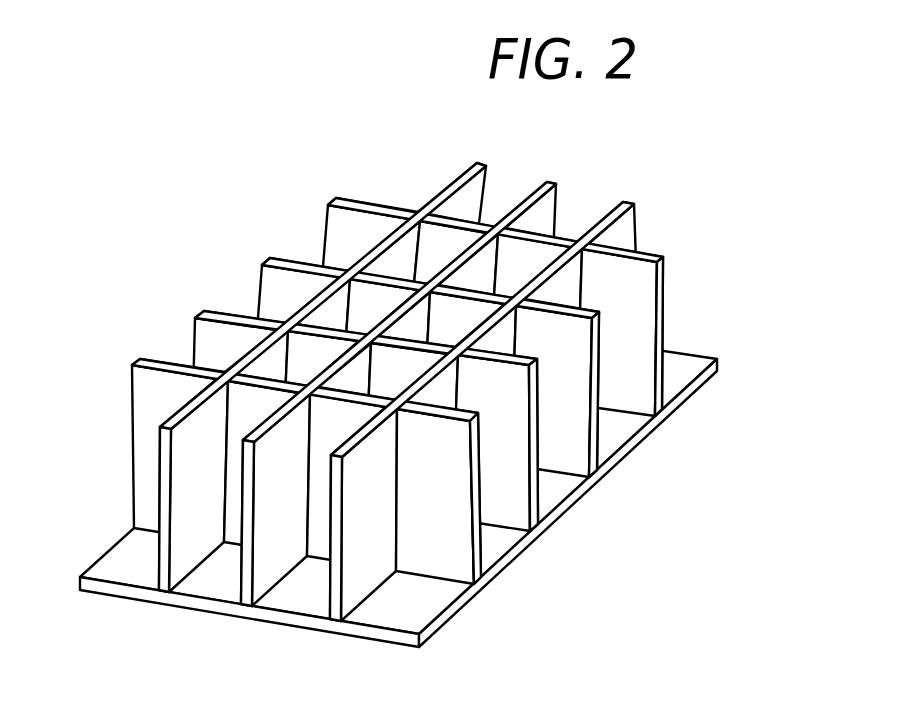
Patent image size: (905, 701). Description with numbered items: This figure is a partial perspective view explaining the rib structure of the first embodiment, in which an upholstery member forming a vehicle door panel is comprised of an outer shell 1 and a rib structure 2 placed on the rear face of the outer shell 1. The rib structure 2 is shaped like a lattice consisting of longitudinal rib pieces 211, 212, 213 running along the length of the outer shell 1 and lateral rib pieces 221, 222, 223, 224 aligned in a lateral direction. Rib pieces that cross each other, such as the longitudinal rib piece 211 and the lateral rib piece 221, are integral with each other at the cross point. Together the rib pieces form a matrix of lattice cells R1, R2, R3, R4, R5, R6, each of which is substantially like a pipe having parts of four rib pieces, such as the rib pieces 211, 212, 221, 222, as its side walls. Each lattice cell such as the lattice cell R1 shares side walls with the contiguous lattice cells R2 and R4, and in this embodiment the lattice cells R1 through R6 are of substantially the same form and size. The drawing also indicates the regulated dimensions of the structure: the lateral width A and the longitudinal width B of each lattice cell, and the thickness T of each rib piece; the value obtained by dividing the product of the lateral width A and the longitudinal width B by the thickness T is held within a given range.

The outer shell 1 is at (713, 388).
The rib structure 2 is at (677, 317).
The longitudinal rib piece 211 is at (633, 202).
The longitudinal rib piece 212 is at (553, 184).
The longitudinal rib piece 213 is at (488, 165).
The lateral rib piece 221 is at (475, 500).
The lateral rib piece 222 is at (537, 485).
The lateral rib piece 223 is at (598, 433).
The lateral rib piece 224 is at (663, 373).
The lattice cell R1 is at (380, 375).
The lattice cell R2 is at (452, 318).
The lattice cell R3 is at (527, 262).
The lattice cell R4 is at (273, 363).
The lattice cell R5 is at (337, 313).
The lattice cell R6 is at (402, 260).
The lateral width A is at (281, 421).
The longitudinal width B is at (440, 405).
The thickness T is at (312, 463).